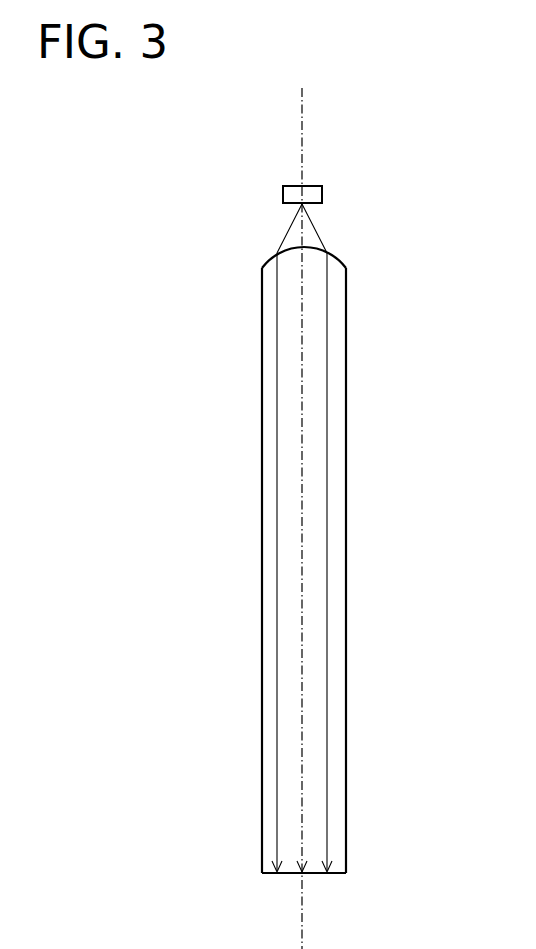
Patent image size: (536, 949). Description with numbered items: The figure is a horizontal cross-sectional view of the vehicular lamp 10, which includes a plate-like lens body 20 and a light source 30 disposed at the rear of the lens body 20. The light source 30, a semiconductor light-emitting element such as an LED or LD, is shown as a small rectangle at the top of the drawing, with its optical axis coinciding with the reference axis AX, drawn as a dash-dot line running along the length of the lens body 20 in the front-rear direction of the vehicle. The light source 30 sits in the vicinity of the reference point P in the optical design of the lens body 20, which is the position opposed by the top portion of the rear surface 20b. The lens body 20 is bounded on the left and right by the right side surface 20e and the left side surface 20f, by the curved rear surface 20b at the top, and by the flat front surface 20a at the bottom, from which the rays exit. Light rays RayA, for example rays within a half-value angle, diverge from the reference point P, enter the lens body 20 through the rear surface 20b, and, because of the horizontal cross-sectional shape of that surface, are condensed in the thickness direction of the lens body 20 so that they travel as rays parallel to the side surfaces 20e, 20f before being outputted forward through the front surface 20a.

The vehicular lamp 10 is at (294, 80).
The reference axis AX is at (303, 116).
The light source 30 is at (286, 185).
The reference point P is at (306, 188).
The lens body 20 is at (346, 337).
The front surface 20a is at (295, 876).
The rear surface 20b is at (332, 250).
The right side surface 20e is at (262, 441).
The left side surface 20f is at (346, 445).
The light rays RayA is at (304, 573).